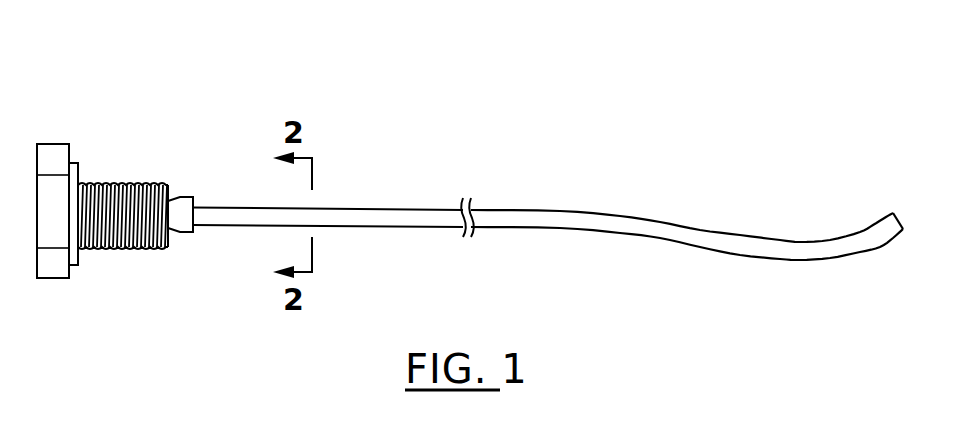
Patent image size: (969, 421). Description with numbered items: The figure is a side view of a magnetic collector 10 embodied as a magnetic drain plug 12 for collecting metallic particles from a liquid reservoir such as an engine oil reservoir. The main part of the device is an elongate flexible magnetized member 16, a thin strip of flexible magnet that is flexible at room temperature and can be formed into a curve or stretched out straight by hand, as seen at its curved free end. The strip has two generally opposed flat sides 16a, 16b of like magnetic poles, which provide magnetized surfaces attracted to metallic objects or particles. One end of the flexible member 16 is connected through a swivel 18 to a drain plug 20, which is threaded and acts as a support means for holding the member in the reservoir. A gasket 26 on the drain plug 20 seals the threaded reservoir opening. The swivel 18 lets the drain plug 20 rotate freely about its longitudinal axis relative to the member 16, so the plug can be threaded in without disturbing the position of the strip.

The magnetic collector 10 is at (450, 96).
The magnetic drain plug 12 is at (585, 170).
The elongate flexible magnetized member 16 is at (398, 212).
The flat side 16a is at (660, 222).
The flat side 16b is at (643, 240).
The swivel 18 is at (185, 196).
The drain plug 20 is at (118, 248).
The gasket 26 is at (76, 163).